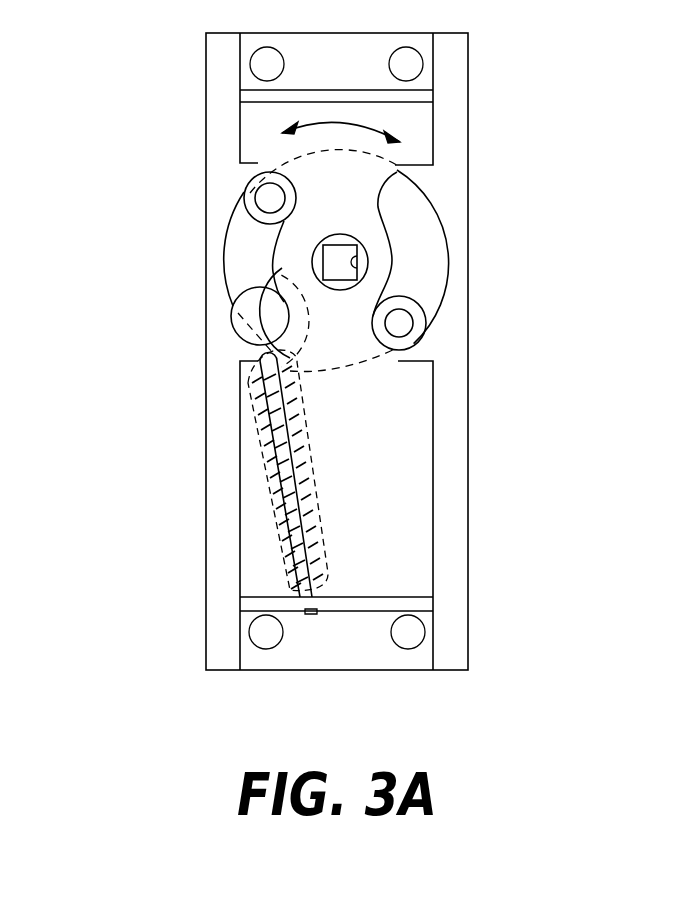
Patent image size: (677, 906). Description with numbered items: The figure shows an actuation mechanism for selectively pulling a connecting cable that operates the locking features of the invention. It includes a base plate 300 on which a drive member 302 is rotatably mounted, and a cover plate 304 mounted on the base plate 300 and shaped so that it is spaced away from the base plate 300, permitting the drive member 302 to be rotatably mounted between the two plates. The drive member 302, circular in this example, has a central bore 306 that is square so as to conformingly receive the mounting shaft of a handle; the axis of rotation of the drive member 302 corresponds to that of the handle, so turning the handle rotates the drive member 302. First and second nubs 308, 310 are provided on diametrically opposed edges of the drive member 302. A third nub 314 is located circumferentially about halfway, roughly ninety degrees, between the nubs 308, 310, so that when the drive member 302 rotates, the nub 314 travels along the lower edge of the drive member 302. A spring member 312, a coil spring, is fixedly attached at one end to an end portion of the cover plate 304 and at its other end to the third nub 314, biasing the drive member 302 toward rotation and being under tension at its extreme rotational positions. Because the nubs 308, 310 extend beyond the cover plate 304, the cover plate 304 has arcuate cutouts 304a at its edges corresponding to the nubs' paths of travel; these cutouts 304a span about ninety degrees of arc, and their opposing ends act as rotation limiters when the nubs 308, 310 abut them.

The base plate 300 is at (452, 560).
The drive member 302 is at (417, 240).
The cover plate 304 is at (403, 427).
The arcuate cutouts 304a is at (272, 247).
The central bore 306 is at (357, 258).
The first nub 308 is at (404, 320).
The second nub 310 is at (262, 198).
The spring member 312 is at (262, 472).
The third nub 314 is at (253, 308).